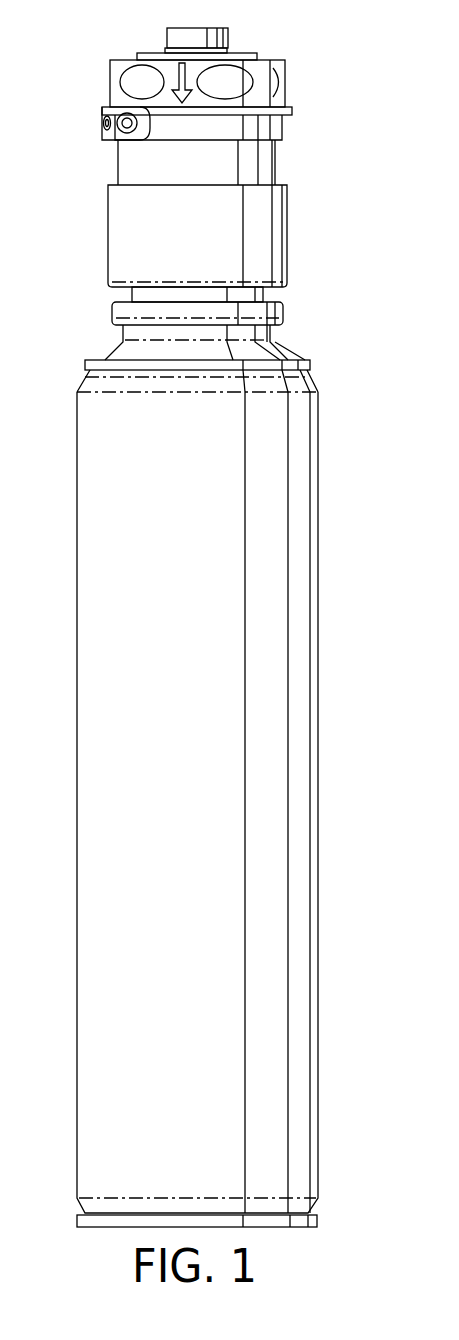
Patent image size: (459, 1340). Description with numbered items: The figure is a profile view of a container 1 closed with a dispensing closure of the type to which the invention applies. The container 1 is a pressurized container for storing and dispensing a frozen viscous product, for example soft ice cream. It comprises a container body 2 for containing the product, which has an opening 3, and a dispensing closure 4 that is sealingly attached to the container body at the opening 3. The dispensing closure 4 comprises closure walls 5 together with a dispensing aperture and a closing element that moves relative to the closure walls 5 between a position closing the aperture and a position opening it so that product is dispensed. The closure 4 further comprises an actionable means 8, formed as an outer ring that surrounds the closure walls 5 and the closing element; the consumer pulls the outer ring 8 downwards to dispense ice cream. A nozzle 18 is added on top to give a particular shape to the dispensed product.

The container 1 is at (63, 300).
The container body 2 is at (317, 600).
The opening 3 is at (281, 338).
The dispensing closure 4 is at (294, 238).
The closure walls 5 is at (118, 215).
The actionable means 8 is at (265, 162).
The nozzle 18 is at (229, 38).